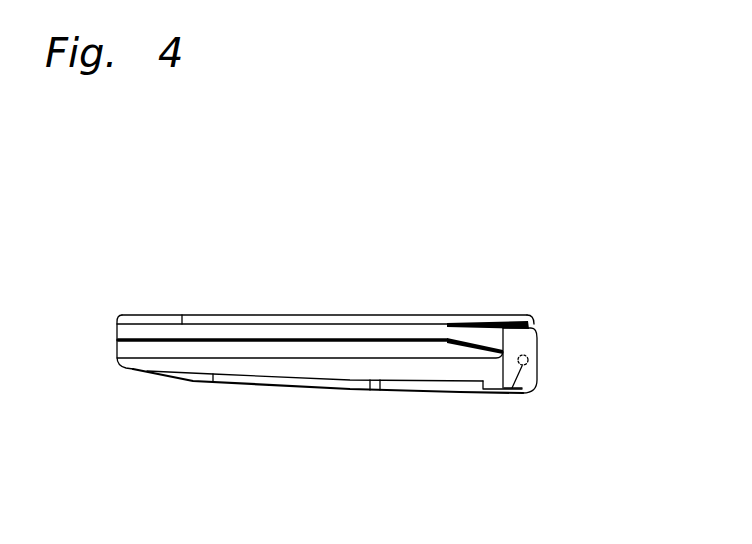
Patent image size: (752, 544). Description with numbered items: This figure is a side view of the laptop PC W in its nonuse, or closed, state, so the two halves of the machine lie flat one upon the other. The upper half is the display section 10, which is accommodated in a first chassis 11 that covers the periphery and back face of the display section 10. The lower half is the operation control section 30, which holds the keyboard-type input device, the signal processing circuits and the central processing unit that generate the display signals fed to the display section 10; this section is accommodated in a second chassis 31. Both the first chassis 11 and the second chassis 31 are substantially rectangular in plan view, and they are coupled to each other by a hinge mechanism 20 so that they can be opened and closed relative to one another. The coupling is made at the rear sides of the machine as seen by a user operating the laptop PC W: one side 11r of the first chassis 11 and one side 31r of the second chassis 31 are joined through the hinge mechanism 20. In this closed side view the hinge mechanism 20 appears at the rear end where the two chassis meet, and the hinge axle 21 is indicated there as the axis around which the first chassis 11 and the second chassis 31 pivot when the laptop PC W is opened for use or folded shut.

The laptop PC W is at (252, 290).
The display section 10 is at (380, 310).
The first chassis 11 is at (280, 310).
The first side of the first chassis 11r is at (527, 326).
The hinge mechanism 20 is at (548, 342).
The hinge axle 21 is at (535, 358).
The operation control section 30 is at (368, 400).
The second chassis 31 is at (277, 372).
The first side of the second chassis 31r is at (538, 381).